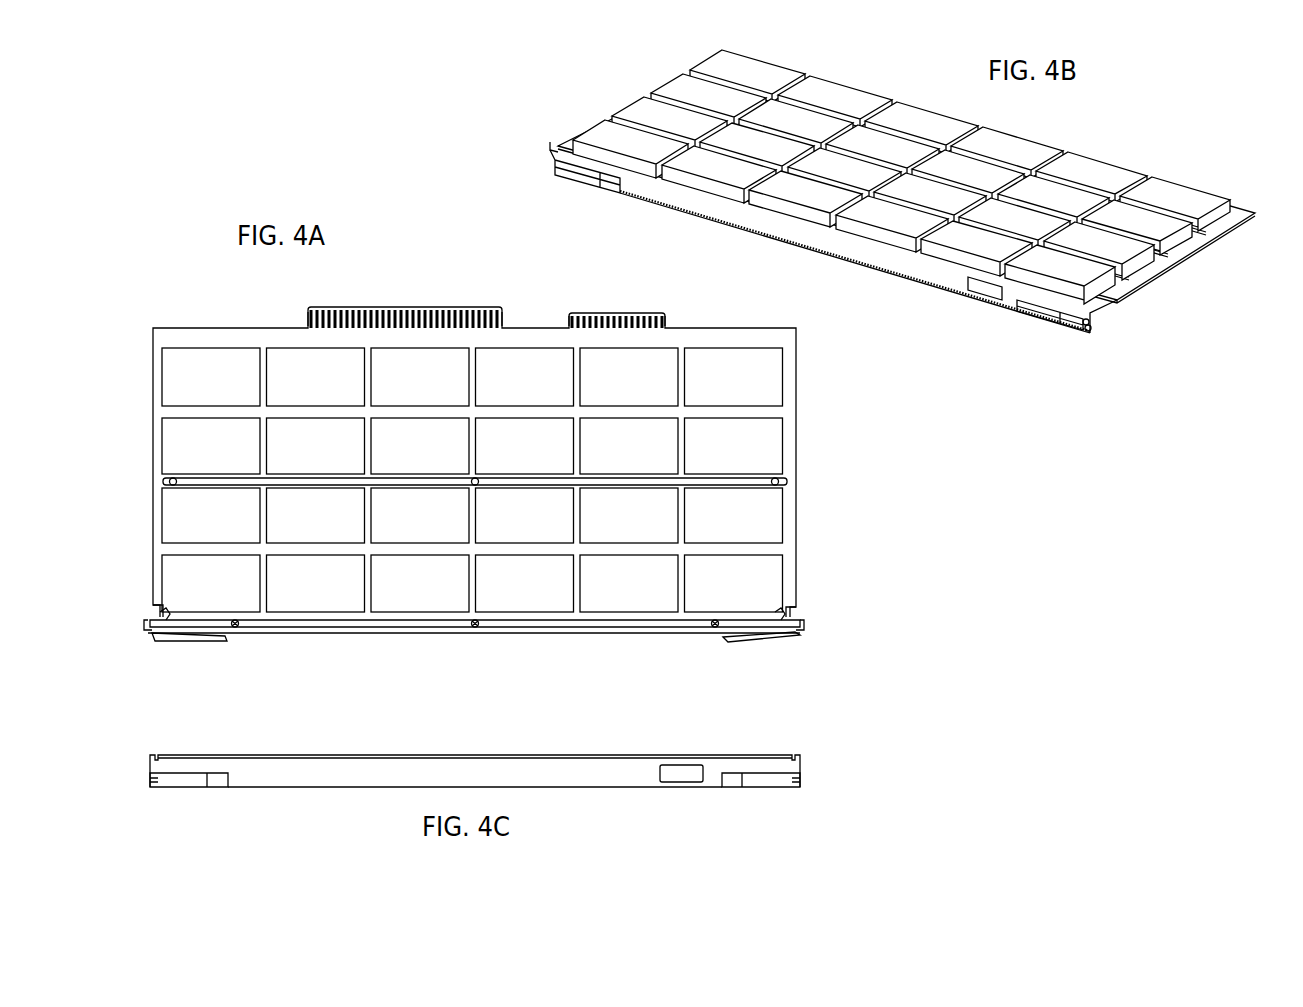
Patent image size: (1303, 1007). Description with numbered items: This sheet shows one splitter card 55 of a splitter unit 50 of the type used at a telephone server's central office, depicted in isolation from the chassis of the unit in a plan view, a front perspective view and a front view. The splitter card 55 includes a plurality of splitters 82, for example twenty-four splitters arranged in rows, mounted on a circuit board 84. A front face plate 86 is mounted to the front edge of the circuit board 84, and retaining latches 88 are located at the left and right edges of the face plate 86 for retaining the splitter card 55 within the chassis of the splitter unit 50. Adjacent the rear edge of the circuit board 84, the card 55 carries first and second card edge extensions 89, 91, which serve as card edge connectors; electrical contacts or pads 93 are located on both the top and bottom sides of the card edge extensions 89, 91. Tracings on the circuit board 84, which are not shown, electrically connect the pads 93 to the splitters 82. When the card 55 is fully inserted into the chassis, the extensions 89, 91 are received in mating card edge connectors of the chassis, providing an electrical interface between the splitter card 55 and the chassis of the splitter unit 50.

In FIG. 4B, the splitter unit 50 is at (919, 191).
In FIG. 4A, the splitter card 55 is at (514, 475).
In FIG. 4C, the splitter card 55 is at (515, 776).
In FIG. 4A, the splitters 82 is at (760, 457).
In FIG. 4B, the splitters 82 is at (1047, 147).
In FIG. 4A, the circuit board 84 is at (797, 532).
In FIG. 4B, the circuit board 84 is at (1128, 293).
In FIG. 4A, the front face plate 86 is at (658, 633).
In FIG. 4B, the front face plate 86 is at (953, 277).
In FIG. 4C, the front face plate 86 is at (603, 788).
In FIG. 4A, the retaining latches 88 is at (760, 637).
In FIG. 4A, the first card edge extension 89 is at (418, 308).
In FIG. 4A, the second card edge extension 91 is at (613, 311).
In FIG. 4A, the electrical contacts/pads 93 is at (667, 315).